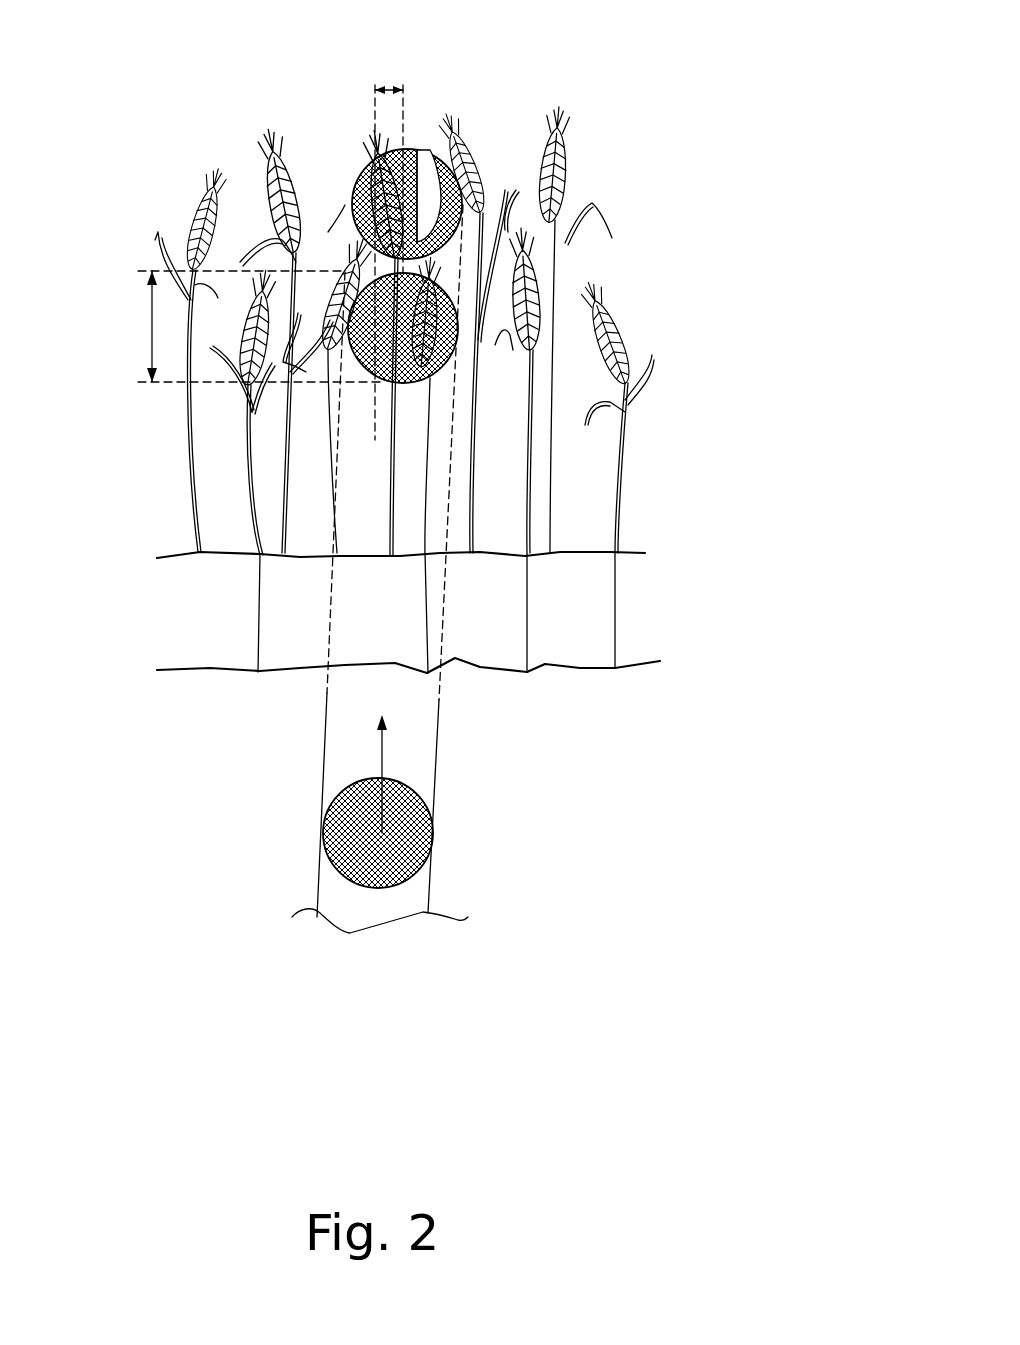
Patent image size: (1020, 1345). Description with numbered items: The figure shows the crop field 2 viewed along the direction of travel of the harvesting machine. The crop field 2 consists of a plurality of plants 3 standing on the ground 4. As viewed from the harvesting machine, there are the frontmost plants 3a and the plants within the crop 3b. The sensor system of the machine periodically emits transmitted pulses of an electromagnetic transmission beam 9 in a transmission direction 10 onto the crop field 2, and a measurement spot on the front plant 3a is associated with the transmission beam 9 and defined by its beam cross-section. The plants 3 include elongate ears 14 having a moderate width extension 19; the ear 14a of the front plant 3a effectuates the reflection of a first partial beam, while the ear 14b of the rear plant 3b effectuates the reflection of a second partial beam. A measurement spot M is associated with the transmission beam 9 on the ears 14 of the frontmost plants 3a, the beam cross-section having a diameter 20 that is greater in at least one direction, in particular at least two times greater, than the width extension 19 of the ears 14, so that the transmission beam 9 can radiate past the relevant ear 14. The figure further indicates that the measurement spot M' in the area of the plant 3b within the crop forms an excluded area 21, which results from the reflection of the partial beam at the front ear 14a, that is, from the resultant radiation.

The crop field 2 is at (672, 265).
The plants 3 is at (415, 561).
The frontmost plant 3a is at (422, 603).
The plant within the crop 3b is at (387, 508).
The ground 4 is at (684, 628).
The transmission beam 9 is at (432, 878).
The transmission direction 10 is at (382, 752).
The ears 14 is at (487, 235).
The ear of the front plant 14a is at (445, 312).
The ear of the rear plant 14b is at (355, 187).
The width extension 19 is at (372, 88).
The diameter 20 is at (148, 306).
The excluded area 21 is at (437, 204).
The measurement spot M is at (527, 213).
The measurement spot on the rear plant M' is at (477, 147).